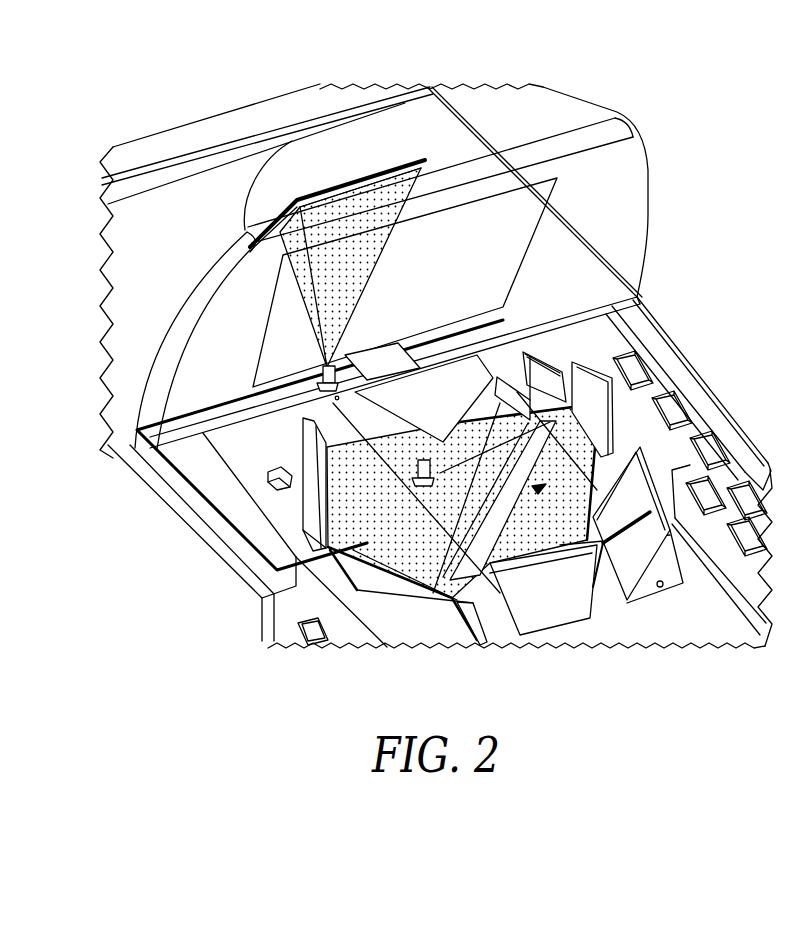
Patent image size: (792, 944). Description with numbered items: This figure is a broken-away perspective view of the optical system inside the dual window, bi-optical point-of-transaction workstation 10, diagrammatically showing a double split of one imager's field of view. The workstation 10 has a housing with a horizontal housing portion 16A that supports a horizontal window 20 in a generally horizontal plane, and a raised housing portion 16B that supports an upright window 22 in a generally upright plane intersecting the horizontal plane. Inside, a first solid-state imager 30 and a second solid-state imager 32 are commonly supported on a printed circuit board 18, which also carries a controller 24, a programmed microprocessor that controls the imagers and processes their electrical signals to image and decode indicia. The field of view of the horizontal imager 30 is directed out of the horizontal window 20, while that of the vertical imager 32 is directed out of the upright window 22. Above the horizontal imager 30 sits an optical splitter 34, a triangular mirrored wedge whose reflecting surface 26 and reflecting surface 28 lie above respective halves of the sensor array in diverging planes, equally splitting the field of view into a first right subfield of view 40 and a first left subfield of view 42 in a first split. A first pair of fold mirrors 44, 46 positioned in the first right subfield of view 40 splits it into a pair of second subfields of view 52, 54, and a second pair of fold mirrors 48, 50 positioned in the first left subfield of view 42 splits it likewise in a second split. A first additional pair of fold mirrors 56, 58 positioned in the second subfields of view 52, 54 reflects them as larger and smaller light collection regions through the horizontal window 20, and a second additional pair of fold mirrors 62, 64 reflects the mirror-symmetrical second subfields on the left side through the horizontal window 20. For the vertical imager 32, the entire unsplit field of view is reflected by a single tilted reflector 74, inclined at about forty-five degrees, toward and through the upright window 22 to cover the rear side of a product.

The point-of-transaction workstation 10 is at (226, 95).
The horizontal housing portion 16A is at (674, 351).
The raised housing portion 16B is at (647, 162).
The printed circuit board 18 is at (207, 506).
The horizontal window 20 is at (662, 588).
The upright window 22 is at (530, 247).
The controller 24 is at (268, 483).
The reflecting surface 26 is at (517, 392).
The reflecting surface 28 is at (305, 420).
The first solid-state imager 30 is at (395, 488).
The second solid-state imager 32 is at (310, 390).
The optical splitter 34 is at (450, 350).
The first right subfield of view 40 is at (528, 352).
The first left subfield of view 42 is at (338, 452).
The fold mirror 44 is at (537, 350).
The fold mirror 46 is at (585, 362).
The fold mirror 48 is at (207, 506).
The fold mirror 50 is at (317, 528).
The second subfield of view 52 is at (488, 605).
The second subfield of view 54 is at (588, 490).
The fold mirror 56 is at (453, 627).
The fold mirror 58 is at (557, 613).
The fold mirror 62 is at (670, 485).
The fold mirror 64 is at (617, 598).
The tilted reflector 74 is at (346, 186).